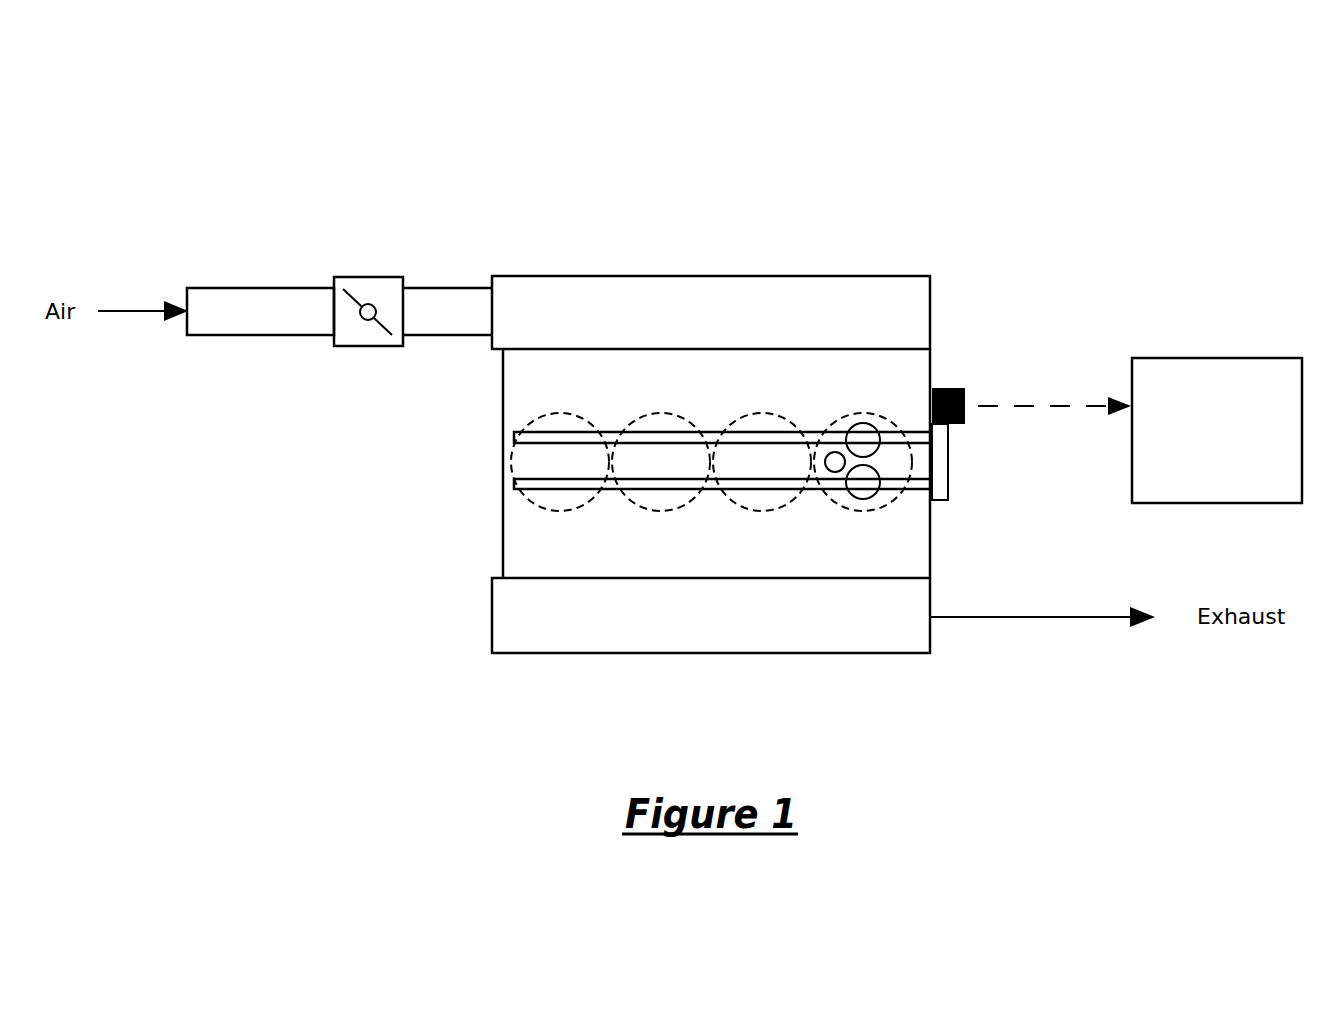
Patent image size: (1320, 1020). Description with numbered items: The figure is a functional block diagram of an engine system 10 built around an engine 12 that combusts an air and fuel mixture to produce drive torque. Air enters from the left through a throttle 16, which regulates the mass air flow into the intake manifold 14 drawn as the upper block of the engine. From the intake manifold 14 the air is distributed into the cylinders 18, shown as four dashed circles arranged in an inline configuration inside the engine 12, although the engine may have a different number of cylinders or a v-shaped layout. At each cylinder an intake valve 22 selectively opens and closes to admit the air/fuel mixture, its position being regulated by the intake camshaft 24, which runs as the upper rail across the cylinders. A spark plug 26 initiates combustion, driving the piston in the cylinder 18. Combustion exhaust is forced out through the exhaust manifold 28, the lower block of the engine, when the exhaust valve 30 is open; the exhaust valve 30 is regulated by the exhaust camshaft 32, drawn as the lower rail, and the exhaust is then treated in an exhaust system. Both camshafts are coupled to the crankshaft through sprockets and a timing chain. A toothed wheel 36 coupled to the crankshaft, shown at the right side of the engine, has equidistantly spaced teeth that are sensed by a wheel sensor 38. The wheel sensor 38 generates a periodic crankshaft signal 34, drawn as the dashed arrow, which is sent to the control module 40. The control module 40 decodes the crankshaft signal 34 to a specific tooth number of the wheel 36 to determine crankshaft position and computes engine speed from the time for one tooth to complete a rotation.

The engine system 10 is at (603, 120).
The engine 12 is at (502, 525).
The intake manifold 14 is at (808, 275).
The throttle 16 is at (345, 347).
The cylinders 18 is at (838, 503).
The intake valve 22 is at (863, 423).
The intake camshaft 24 is at (918, 432).
The spark plug 26 is at (834, 452).
The exhaust manifold 28 is at (710, 653).
The exhaust valve 30 is at (863, 499).
The exhaust camshaft 32 is at (920, 490).
The crankshaft signal 34 is at (1053, 440).
The wheel 36 is at (949, 458).
The wheel sensor 38 is at (950, 388).
The control module 40 is at (1248, 358).